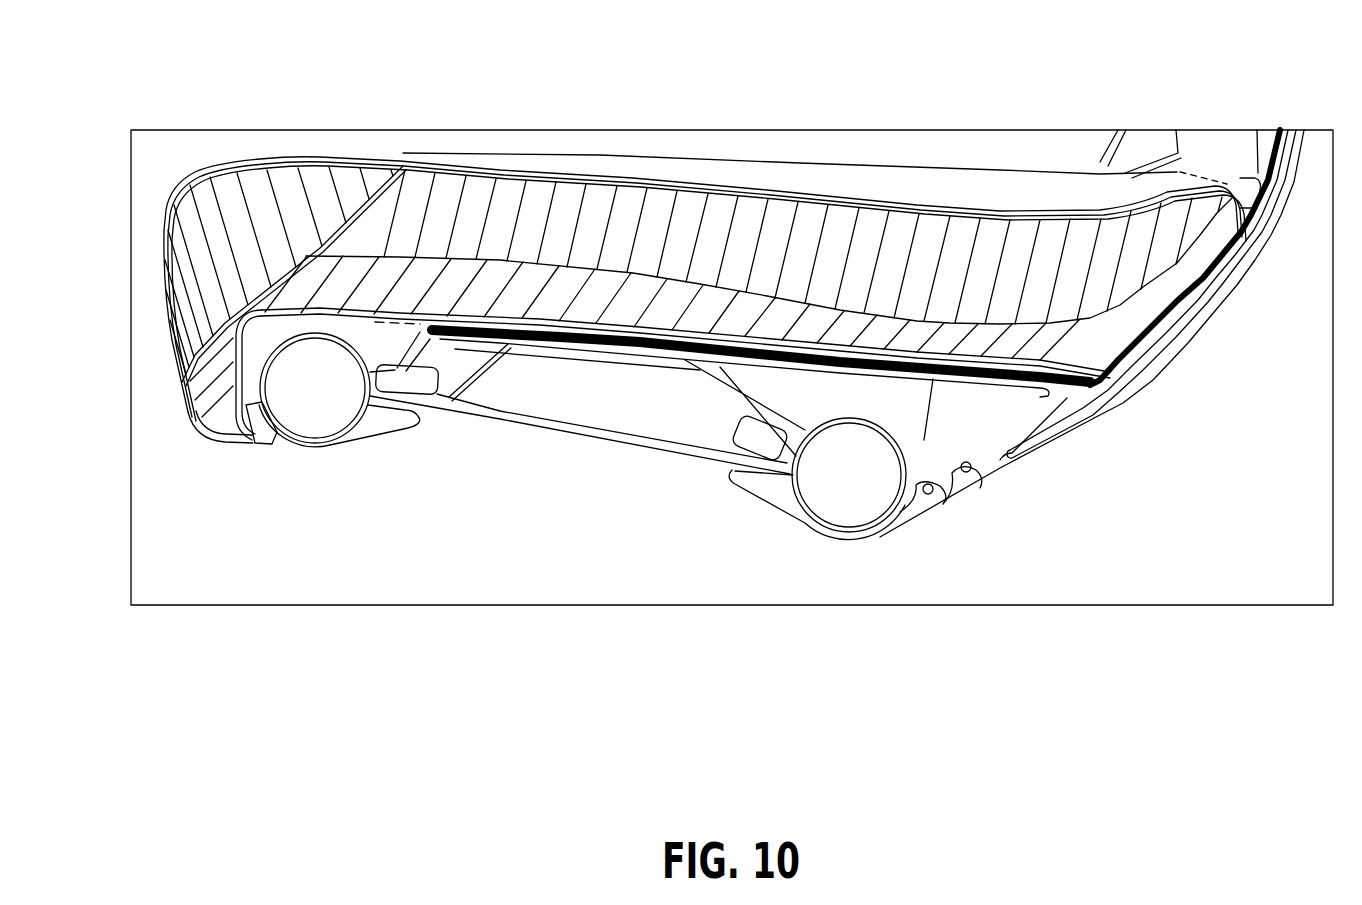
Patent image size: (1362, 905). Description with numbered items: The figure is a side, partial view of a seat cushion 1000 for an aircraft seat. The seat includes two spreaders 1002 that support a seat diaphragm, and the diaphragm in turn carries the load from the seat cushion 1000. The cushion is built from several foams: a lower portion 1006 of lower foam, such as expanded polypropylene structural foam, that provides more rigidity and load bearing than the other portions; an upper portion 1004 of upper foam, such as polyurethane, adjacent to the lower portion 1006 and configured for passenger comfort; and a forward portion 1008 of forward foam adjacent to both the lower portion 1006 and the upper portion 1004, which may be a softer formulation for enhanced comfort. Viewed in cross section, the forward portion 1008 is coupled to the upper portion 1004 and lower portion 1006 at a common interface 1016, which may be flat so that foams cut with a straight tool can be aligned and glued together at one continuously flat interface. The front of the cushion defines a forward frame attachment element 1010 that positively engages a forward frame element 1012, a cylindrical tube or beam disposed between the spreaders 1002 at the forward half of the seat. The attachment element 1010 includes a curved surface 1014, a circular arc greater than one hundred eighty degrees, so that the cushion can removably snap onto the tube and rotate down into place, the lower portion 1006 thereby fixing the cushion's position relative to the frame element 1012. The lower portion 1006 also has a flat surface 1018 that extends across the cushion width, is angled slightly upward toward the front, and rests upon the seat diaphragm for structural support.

The seat cushion 1000 is at (234, 54).
The spreaders 1002 is at (912, 495).
The upper portion 1004 is at (631, 203).
The lower portion 1006 is at (514, 292).
The forward portion 1008 is at (207, 240).
The forward frame attachment element 1010 is at (250, 397).
The forward frame element 1012 is at (340, 428).
The curved surface 1014 is at (300, 335).
The common interface 1016 is at (207, 338).
The flat surface 1018 is at (718, 336).